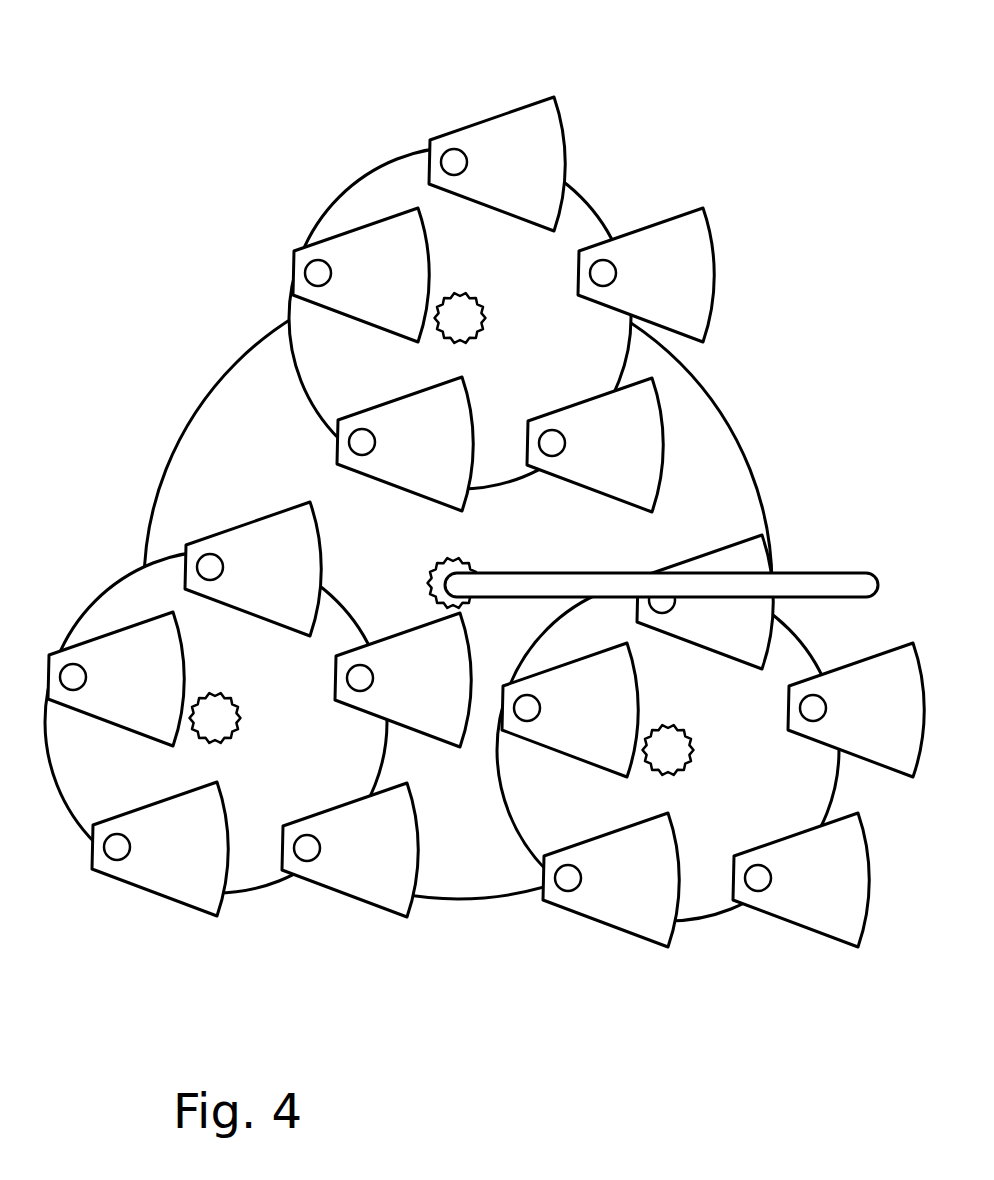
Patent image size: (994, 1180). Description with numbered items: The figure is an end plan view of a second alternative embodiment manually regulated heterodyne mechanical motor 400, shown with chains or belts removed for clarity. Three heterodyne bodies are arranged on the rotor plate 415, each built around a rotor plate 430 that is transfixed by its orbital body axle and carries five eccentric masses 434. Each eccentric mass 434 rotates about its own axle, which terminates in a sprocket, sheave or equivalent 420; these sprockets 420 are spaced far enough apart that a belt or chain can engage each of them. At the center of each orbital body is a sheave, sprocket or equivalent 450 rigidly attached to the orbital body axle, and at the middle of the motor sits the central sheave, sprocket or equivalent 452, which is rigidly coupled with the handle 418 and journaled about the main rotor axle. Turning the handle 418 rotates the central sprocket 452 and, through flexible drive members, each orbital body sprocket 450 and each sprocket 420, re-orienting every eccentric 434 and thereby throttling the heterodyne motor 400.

The heterodyne motor 400 is at (266, 56).
The rotor plate 415 is at (700, 450).
The handle 418 is at (818, 580).
The sprocket, sheave or equivalent 420 is at (318, 272).
The rotor plate 430 is at (606, 226).
The eccentric mass 434 is at (516, 143).
The sheave, sprocket or equivalent 450 is at (463, 310).
The central sheave, sprocket or equivalent 452 is at (466, 562).